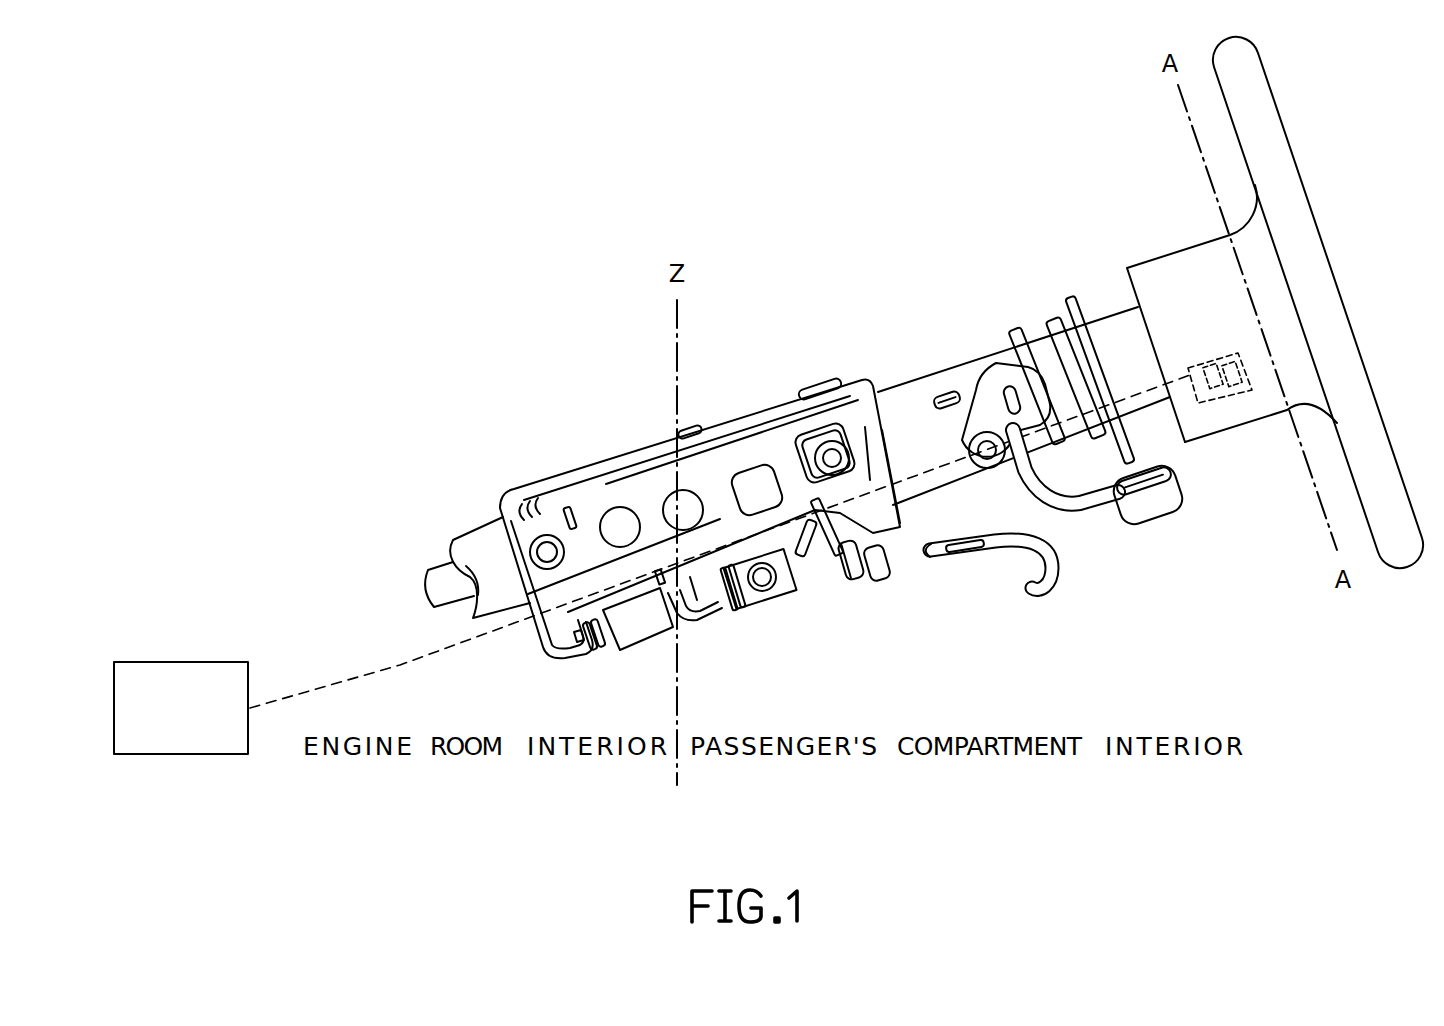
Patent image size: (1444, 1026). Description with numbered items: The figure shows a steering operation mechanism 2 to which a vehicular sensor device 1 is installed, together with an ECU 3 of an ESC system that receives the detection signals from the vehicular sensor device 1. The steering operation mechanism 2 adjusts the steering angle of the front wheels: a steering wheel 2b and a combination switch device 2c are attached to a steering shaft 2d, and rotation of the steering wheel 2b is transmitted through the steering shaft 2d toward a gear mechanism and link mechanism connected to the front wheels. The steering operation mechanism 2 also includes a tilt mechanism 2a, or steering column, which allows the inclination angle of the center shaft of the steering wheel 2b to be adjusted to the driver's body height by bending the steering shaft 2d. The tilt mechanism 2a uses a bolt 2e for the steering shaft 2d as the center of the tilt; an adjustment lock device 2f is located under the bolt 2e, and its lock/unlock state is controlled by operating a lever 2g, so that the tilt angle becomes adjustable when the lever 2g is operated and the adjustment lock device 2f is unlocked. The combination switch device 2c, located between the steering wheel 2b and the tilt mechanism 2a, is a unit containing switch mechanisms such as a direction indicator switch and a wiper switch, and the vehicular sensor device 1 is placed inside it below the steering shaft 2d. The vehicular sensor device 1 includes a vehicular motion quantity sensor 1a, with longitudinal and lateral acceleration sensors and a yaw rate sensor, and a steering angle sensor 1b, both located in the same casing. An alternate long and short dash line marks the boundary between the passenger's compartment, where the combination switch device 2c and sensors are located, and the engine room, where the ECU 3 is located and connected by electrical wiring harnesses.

The vehicular sensor device 1 is at (1220, 487).
The vehicular motion quantity sensor 1a is at (1210, 397).
The steering angle sensor 1b is at (1233, 397).
The steering operation mechanism 2 is at (965, 316).
The tilt mechanism 2a is at (806, 388).
The steering wheel 2b is at (1306, 196).
The combination switch device 2c is at (1165, 256).
The steering shaft 2d is at (455, 612).
The bolt 2e is at (815, 556).
The adjustment lock device 2f is at (876, 579).
The lever 2g is at (1040, 598).
The ECU 3 is at (182, 662).